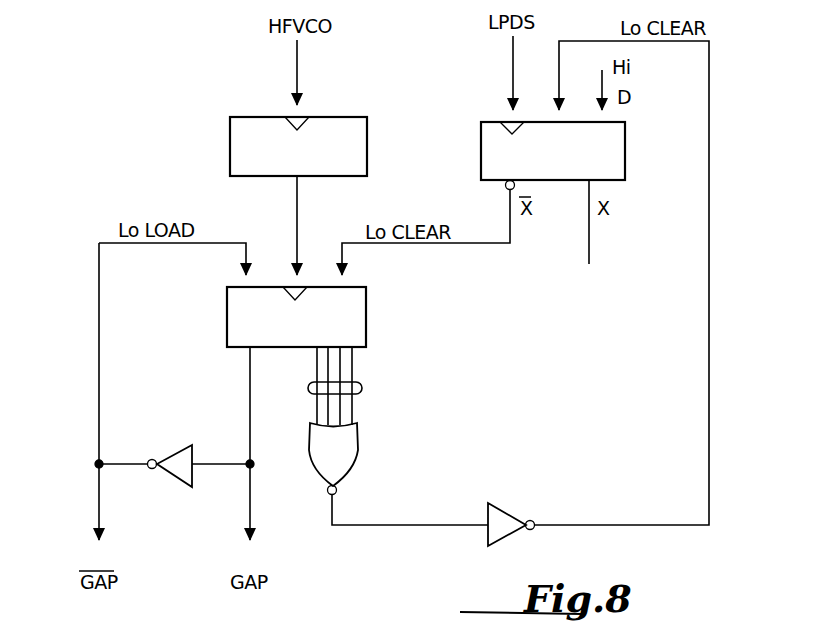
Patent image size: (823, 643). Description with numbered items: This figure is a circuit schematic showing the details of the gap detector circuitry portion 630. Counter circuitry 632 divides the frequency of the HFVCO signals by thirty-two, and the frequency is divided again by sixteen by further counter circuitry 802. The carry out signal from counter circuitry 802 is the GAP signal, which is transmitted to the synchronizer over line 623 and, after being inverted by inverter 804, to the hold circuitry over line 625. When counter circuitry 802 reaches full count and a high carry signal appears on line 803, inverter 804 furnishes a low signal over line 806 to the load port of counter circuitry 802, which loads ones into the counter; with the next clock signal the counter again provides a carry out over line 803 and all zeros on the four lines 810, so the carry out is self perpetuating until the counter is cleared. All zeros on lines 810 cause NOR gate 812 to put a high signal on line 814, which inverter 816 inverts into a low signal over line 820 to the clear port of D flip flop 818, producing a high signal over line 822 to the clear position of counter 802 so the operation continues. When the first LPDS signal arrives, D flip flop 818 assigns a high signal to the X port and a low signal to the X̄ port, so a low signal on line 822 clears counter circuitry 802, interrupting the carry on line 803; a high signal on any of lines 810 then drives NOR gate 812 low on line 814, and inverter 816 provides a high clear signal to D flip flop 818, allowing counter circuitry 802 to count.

The gap detector circuitry portion 630 is at (244, 88).
The counter circuitry 632 is at (230, 145).
The counter circuitry 802 is at (366, 322).
The line 803 is at (250, 375).
The inverter 804 is at (178, 455).
The line 806 is at (97, 363).
The four lines 810 is at (362, 388).
The NOR gate 812 is at (345, 452).
The line 814 is at (417, 524).
The inverter 816 is at (497, 518).
The D flip flop 818 is at (625, 161).
The line 820 is at (710, 308).
The line 822 is at (500, 248).
The line 623 is at (250, 514).
The line 625 is at (97, 505).